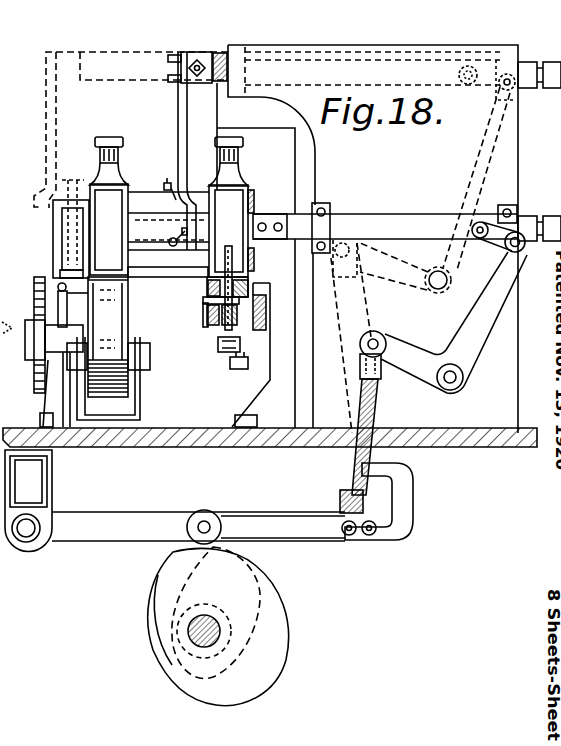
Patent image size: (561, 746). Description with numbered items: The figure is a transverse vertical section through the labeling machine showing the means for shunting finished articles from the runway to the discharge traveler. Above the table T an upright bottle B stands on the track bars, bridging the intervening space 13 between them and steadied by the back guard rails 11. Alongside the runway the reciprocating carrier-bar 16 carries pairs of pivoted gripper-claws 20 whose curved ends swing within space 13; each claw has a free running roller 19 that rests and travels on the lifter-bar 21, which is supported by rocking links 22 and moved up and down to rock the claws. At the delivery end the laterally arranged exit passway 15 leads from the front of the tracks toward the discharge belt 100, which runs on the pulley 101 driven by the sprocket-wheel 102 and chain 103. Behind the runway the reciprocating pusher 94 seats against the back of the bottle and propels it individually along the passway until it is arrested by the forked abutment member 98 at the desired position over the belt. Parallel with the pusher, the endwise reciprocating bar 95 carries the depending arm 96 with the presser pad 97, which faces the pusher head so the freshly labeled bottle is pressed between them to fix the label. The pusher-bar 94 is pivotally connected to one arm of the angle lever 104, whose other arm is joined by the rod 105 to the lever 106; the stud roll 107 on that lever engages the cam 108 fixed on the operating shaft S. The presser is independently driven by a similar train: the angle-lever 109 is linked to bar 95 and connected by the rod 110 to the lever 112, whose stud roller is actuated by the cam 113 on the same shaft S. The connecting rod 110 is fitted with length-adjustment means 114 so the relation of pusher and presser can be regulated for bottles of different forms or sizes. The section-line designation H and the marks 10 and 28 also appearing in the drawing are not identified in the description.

The depending arm 96 is at (47, 106).
The endwise reciprocating bar 95 is at (225, 72).
The presser pad 97 is at (204, 195).
The forked abutment member 98 is at (60, 250).
The exit passway 15 is at (168, 234).
The fitting 10 is at (270, 195).
The gripper-claws 20 is at (231, 263).
The back guard rails 11 is at (254, 207).
The intervening space 13 is at (212, 301).
The bearing block 28 is at (210, 326).
The free running roller 19 is at (212, 330).
The lifter-bar 21 is at (222, 341).
The rocking links 22 is at (238, 357).
The reciprocating carrier-bar 16 is at (266, 317).
The reciprocating pusher 94 is at (378, 228).
The angle-lever 109 is at (478, 158).
The connecting rod 110 is at (346, 318).
The angle lever 104 is at (488, 318).
The rod 105 is at (377, 405).
The sprocket-wheel 102 is at (42, 393).
The chain 103 is at (44, 329).
The discharge belt 100 is at (103, 348).
The pulley 101 is at (128, 310).
The lever 106 is at (138, 513).
The stud roll 107 is at (207, 509).
The lever 112 is at (268, 513).
The length-adjustment means 114 is at (400, 505).
The cam 108 is at (280, 619).
The cam 113 is at (153, 613).
The table T is at (170, 436).
The section line H is at (220, 45).
The bottles or articles B is at (109, 206).
The operating shaft S is at (188, 637).